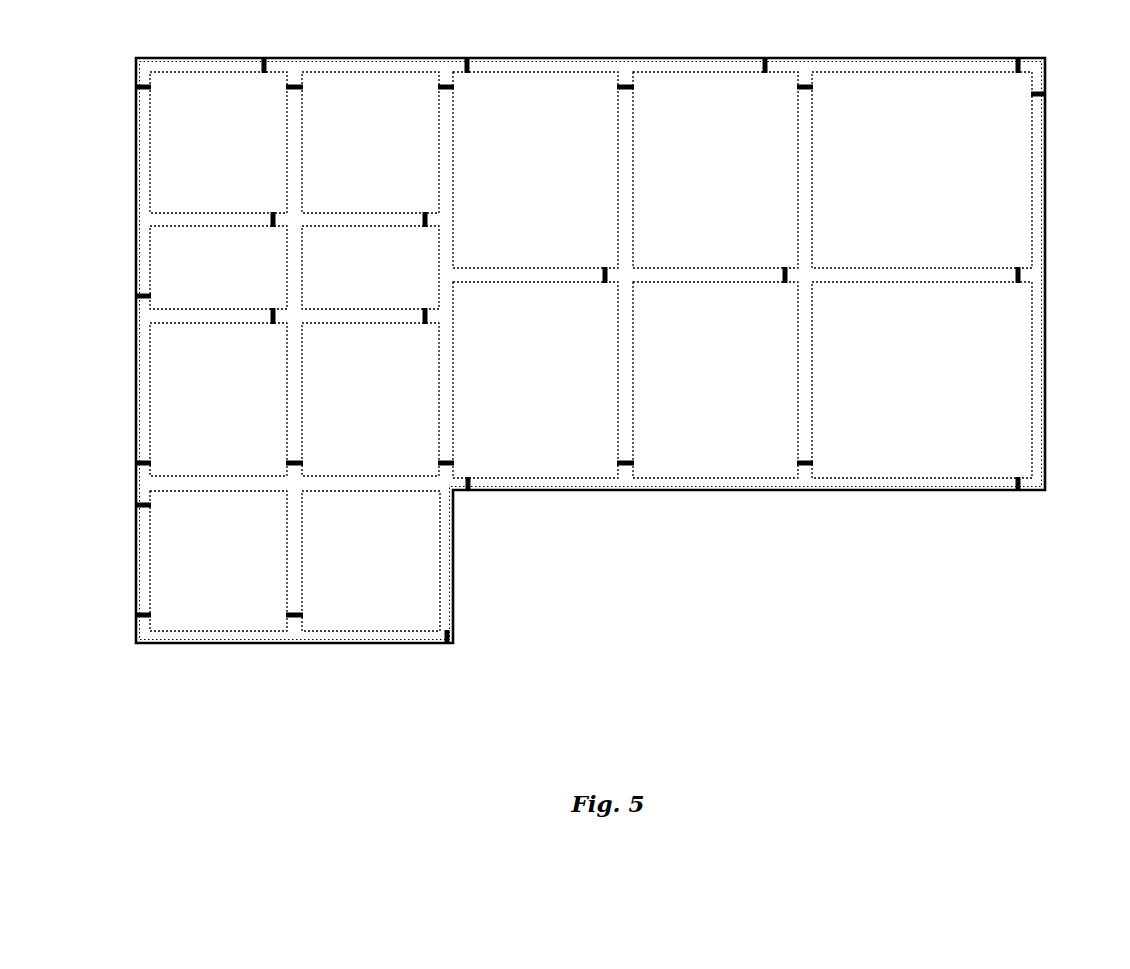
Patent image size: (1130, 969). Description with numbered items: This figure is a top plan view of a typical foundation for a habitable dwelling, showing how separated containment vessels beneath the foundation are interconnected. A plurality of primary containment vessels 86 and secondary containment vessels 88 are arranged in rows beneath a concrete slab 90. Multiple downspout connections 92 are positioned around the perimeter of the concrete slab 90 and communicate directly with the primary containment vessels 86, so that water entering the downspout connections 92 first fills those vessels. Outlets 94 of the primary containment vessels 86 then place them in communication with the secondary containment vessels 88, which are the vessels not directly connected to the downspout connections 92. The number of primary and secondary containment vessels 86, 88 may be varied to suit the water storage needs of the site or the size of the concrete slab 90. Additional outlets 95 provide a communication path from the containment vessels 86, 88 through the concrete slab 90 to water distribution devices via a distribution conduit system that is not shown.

The primary containment vessel 86 is at (203, 154).
The secondary containment vessel 88 is at (359, 154).
The concrete slab 90 is at (791, 57).
The downspout connection 92 is at (467, 58).
The outlet 94 is at (296, 92).
The additional outlet 95 is at (265, 58).